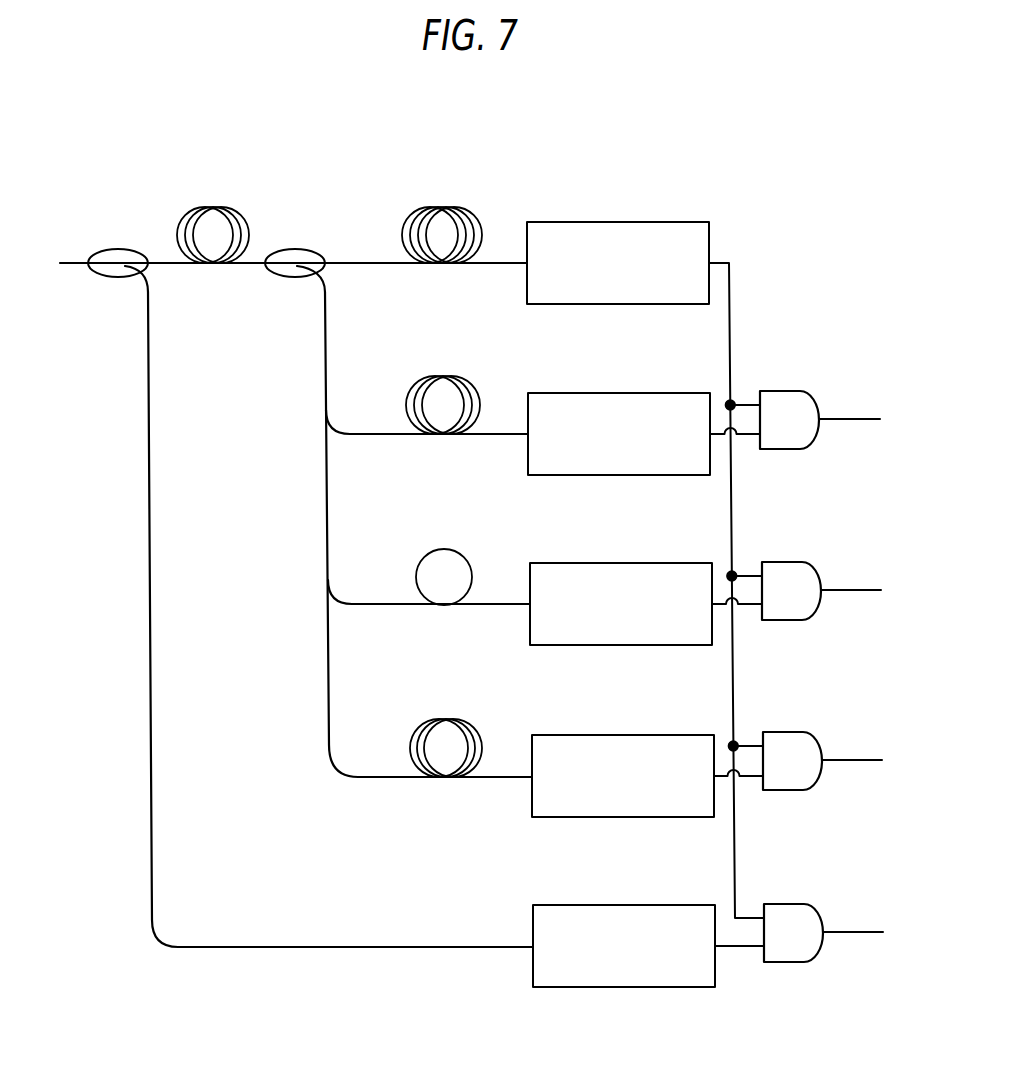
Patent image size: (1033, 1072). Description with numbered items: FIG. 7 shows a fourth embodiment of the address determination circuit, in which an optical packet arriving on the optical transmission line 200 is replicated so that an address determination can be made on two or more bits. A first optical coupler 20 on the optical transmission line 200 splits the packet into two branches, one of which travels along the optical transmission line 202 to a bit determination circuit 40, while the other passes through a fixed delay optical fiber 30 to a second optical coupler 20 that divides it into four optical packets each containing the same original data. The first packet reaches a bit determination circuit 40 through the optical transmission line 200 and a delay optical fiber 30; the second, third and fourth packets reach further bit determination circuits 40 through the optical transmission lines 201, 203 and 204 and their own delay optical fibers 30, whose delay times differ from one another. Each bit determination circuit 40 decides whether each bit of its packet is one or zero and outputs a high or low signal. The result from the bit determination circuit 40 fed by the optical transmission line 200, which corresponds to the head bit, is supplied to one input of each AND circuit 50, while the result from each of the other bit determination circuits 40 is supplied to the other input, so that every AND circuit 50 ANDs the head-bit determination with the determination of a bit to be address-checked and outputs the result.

The optical coupler 20 is at (118, 250).
The delay optical fiber 30 is at (213, 207).
The bit determination circuit 40 is at (620, 222).
The AND circuit 50 is at (790, 391).
The optical transmission line 200 is at (517, 262).
The optical transmission line 201 is at (386, 436).
The optical transmission line 202 is at (215, 946).
The optical transmission line 203 is at (386, 606).
The optical transmission line 204 is at (471, 780).